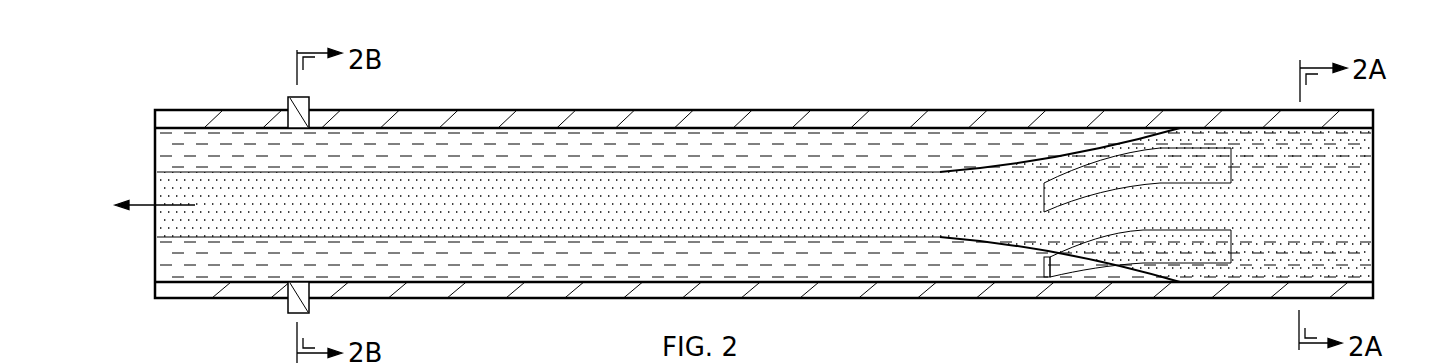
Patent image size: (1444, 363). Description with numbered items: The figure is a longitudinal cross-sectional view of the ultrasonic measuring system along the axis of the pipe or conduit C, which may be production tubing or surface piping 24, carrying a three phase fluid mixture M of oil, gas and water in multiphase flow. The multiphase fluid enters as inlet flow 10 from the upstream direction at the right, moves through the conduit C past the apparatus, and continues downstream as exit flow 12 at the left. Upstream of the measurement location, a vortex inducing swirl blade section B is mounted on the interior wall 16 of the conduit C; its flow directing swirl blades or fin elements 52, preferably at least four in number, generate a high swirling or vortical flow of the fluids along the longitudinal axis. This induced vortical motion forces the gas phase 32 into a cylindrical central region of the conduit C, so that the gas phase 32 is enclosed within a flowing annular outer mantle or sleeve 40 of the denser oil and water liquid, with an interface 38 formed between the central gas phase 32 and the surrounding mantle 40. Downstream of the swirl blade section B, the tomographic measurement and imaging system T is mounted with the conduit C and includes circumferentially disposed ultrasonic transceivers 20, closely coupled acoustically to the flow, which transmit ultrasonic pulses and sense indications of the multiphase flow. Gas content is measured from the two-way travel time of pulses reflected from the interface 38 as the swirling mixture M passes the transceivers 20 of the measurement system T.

The inlet flow 10 is at (1347, 205).
The exit flow 12 is at (147, 203).
The interior wall 16 is at (178, 280).
The ultrasonic transceivers 20 is at (290, 105).
The production tubing or surface piping 24 is at (1187, 300).
The gas phase 32 is at (557, 216).
The interface 38 is at (425, 175).
The annular outer mantle or sleeve 40 is at (657, 138).
The swirl blades 52 is at (1220, 142).
The tomographic measurement and imaging system T is at (278, 78).
The pipe or conduit C is at (717, 92).
The vortex inducing swirl blade section B is at (1079, 138).
The fluid mixture M is at (1352, 254).